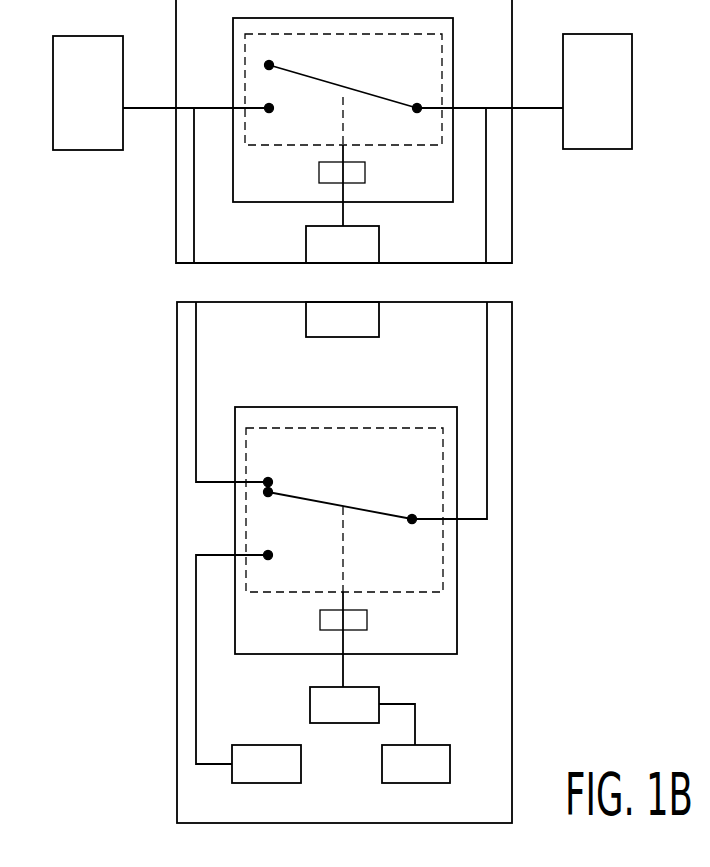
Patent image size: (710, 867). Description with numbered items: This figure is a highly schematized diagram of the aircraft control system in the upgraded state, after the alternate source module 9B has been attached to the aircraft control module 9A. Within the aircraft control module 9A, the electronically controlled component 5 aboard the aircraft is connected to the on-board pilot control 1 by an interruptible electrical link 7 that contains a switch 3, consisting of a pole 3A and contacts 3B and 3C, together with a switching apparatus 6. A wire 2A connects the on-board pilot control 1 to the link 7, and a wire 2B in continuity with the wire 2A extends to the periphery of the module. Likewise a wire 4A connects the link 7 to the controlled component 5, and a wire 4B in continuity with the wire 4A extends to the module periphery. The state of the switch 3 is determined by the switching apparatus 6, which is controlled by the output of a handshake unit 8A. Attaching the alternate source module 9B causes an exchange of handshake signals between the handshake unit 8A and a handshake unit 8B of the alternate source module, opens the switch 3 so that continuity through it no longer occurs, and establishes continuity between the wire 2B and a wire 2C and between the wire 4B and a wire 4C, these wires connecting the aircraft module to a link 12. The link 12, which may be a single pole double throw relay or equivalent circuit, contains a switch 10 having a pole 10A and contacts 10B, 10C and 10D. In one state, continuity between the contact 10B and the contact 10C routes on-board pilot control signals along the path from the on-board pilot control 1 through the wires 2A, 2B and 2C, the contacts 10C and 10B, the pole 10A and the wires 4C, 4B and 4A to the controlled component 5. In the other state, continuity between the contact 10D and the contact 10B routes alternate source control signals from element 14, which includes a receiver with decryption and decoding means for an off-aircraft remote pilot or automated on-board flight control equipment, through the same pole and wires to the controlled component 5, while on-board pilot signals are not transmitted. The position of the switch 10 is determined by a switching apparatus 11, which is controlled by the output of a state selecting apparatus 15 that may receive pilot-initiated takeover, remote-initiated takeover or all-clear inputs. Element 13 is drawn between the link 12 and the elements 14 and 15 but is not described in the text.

The on-board pilot control 1 is at (95, 106).
The wire 2A is at (152, 107).
The wire 2B is at (195, 238).
The wire 2C is at (197, 357).
The switch 3 is at (393, 148).
The pole 3A is at (374, 93).
The contact 3B is at (274, 62).
The contact 3C is at (270, 113).
The wire 4A is at (540, 107).
The wire 4B is at (485, 243).
The wire 4C is at (486, 351).
The controlled component 5 is at (604, 106).
The switching apparatus 6 is at (316, 175).
The interruptible electrical link 7 is at (457, 77).
The handshake unit 8A is at (357, 256).
The handshake unit 8B is at (357, 332).
The aircraft control module 9A is at (512, 224).
The alternate source module 9B is at (512, 330).
The switch 10 is at (387, 594).
The pole 10A is at (355, 508).
The contact 10B is at (275, 490).
The contact 10C is at (271, 478).
The contact 10D is at (270, 560).
The switching apparatus 11 is at (318, 619).
The link 12 is at (380, 406).
The control unit 13 is at (358, 719).
The alternate source of control signals 14 is at (281, 779).
The state selecting apparatus 15 is at (430, 779).